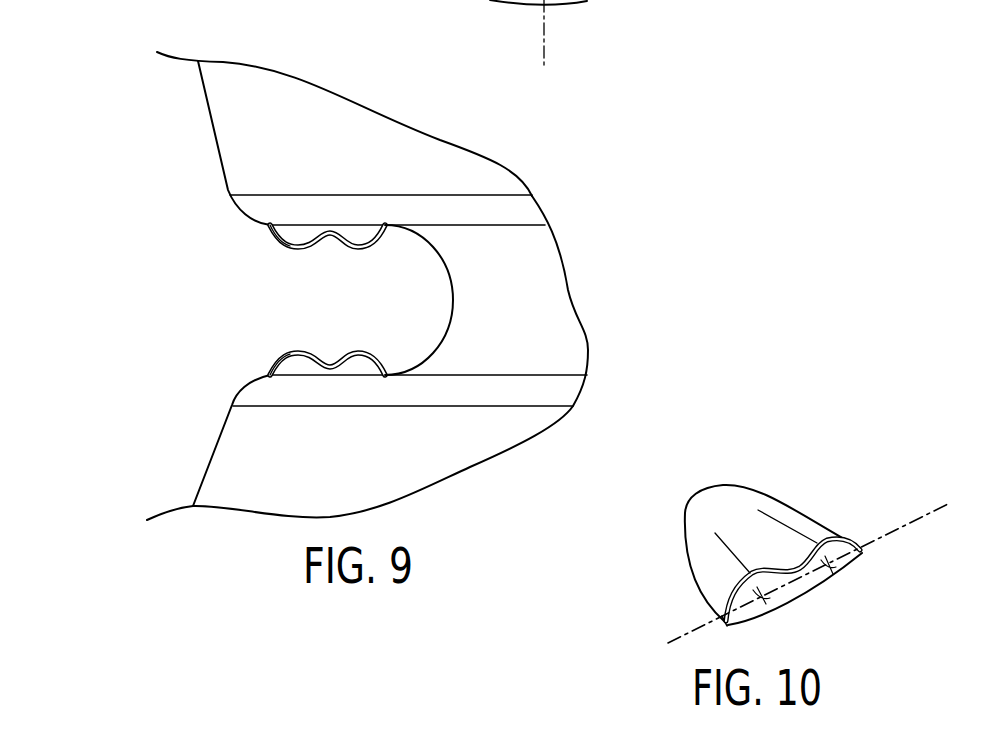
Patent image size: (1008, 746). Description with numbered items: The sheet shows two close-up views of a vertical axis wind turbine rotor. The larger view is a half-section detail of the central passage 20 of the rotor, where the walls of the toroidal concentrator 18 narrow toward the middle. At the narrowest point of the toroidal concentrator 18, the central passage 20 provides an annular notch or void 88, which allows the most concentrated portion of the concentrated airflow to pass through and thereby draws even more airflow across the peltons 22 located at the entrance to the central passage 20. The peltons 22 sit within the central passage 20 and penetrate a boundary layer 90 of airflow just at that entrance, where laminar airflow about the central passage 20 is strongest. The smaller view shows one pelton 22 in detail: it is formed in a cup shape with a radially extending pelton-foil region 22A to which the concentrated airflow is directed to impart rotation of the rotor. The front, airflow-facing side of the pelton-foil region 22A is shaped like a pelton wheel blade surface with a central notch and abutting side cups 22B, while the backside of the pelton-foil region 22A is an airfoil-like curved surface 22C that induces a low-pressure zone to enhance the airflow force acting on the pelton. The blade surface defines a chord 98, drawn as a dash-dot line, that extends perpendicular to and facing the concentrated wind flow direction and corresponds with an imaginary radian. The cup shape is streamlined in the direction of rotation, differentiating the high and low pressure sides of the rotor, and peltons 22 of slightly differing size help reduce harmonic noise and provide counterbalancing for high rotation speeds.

In FIG. 9, the toroidal concentrator 18 is at (125, 88).
In FIG. 9, the central passage 20 is at (147, 298).
In FIG. 9, the pelton 22 is at (295, 233).
In FIG. 10, the pelton 22 is at (729, 516).
In FIG. 10, the pelton-foil region 22A is at (664, 572).
In FIG. 10, the side cups 22B is at (806, 575).
In FIG. 10, the backside airfoil-like curved surface 22C is at (737, 508).
In FIG. 9, the annular notch or void 88 is at (413, 287).
In FIG. 9, the boundary layer 90 is at (268, 243).
In FIG. 9, the chord 98 is at (544, 30).
In FIG. 10, the chord 98 is at (930, 515).